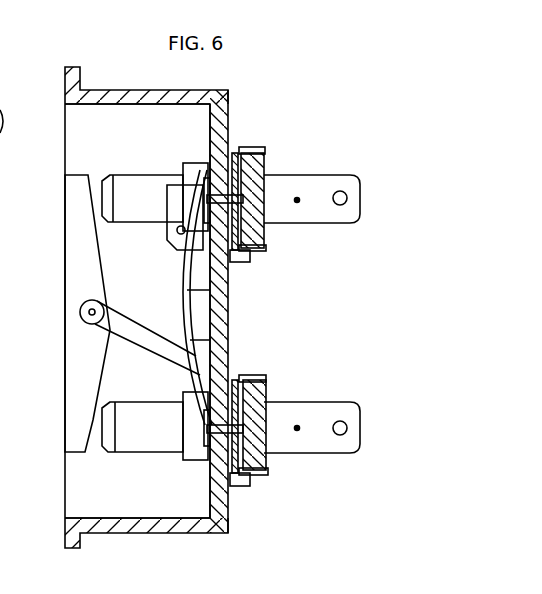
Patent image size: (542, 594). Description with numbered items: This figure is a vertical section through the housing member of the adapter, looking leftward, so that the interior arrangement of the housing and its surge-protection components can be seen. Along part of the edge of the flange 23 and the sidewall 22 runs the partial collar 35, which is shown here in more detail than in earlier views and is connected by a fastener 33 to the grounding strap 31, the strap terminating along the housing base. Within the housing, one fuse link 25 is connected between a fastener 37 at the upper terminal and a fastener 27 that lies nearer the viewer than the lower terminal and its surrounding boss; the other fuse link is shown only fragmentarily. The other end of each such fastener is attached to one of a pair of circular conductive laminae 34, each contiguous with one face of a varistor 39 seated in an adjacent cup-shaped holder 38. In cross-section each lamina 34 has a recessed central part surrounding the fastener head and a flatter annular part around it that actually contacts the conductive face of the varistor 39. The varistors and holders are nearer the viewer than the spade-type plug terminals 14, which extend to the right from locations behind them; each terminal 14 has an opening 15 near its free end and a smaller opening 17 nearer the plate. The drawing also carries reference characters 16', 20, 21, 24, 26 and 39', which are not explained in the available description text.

The plug terminal 14 is at (326, 186).
The opening 15 is at (347, 205).
The solenoid coil 16' is at (131, 318).
The smaller opening 17 is at (297, 202).
The housing 20 is at (233, 94).
The mounting plate 21 is at (228, 328).
The sidewall 22 is at (124, 90).
The flange 23 is at (67, 532).
The bracket 24 is at (202, 168).
The fuse link 25 is at (181, 297).
The housing side wall 26 is at (0, 289).
The fastener 27 is at (197, 194).
The grounding strap 31 is at (150, 340).
The fastener 33 is at (97, 299).
The conductive lamina 34 is at (248, 252).
The partial collar 35 is at (77, 257).
The fastener 37 is at (172, 243).
The cup-shaped holder 38 is at (236, 260).
The varistor 39 is at (278, 307).
The contact block cap 39' is at (276, 296).